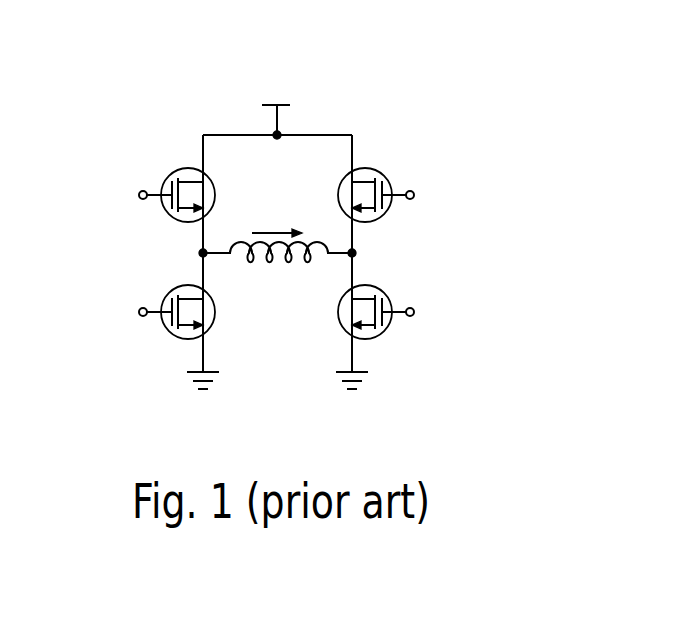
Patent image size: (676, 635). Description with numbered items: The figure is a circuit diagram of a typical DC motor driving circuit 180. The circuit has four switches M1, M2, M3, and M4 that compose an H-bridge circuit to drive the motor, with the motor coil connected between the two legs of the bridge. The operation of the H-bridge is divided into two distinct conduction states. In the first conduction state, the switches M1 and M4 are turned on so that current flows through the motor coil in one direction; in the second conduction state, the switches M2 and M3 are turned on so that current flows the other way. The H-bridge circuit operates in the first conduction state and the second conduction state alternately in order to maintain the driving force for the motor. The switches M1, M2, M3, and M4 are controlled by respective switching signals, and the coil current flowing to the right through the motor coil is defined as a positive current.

The DC motor driving circuit 180 is at (300, 208).
The switch M1 is at (167, 180).
The switch M2 is at (388, 180).
The switch M3 is at (167, 328).
The switch M4 is at (388, 328).